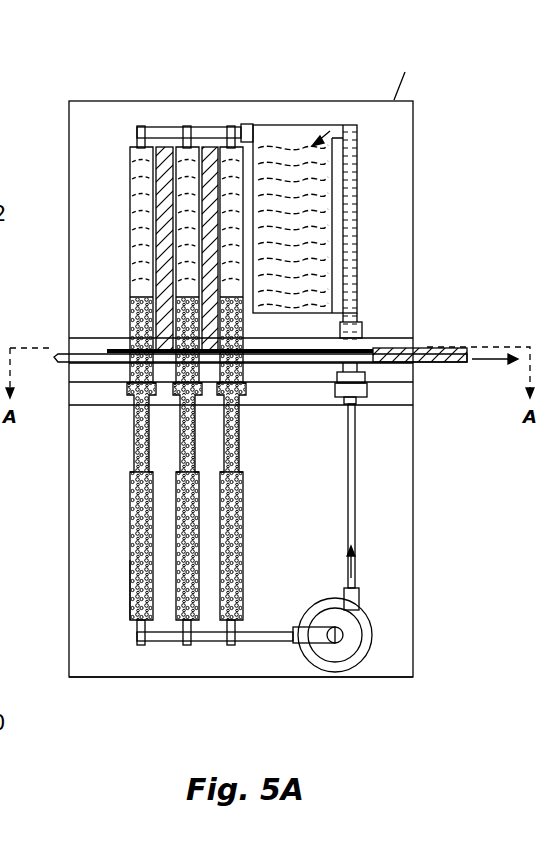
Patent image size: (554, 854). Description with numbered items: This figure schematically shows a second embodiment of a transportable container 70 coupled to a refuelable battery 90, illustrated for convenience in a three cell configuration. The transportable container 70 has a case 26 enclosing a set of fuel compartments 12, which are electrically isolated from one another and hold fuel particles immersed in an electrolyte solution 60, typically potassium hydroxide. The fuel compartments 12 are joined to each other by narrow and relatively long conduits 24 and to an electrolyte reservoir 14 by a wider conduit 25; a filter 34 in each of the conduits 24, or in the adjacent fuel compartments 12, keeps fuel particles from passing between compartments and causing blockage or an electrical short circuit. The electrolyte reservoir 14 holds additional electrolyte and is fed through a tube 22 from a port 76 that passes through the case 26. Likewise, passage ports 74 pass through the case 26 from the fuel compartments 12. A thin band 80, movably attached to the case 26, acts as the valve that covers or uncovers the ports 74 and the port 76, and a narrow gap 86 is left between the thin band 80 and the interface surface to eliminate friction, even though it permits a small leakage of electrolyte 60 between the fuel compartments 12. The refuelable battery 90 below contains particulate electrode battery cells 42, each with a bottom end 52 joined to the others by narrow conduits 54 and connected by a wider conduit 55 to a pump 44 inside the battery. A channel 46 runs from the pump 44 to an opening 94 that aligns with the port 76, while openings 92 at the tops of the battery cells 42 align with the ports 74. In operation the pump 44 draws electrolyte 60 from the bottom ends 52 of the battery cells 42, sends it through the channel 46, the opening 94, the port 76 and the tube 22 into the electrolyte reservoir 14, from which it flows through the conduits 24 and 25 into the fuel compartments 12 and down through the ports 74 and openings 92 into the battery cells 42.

The fuel compartments 12 is at (230, 190).
The electrolyte reservoir 14 is at (325, 167).
The tube 22 is at (358, 223).
The conduits 24 is at (155, 127).
The wider conduit 25 is at (248, 128).
The case 26 is at (407, 73).
The filter 34 is at (141, 127).
The particulate electrode battery cells 42 is at (222, 505).
The pump 44 is at (370, 628).
The channel 46 is at (357, 478).
The bottom end 52 is at (132, 590).
The conduits 54 is at (168, 641).
The wider conduit 55 is at (267, 643).
The electrolyte solution 60 is at (297, 142).
The transportable container 70 is at (58, 105).
The passage ports 74 is at (227, 348).
The port 76 is at (365, 350).
The thin band 80 is at (457, 357).
The narrow gap 86 is at (372, 348).
The refuelable battery 90 is at (93, 690).
The openings 92 is at (222, 373).
The opening 94 is at (363, 362).